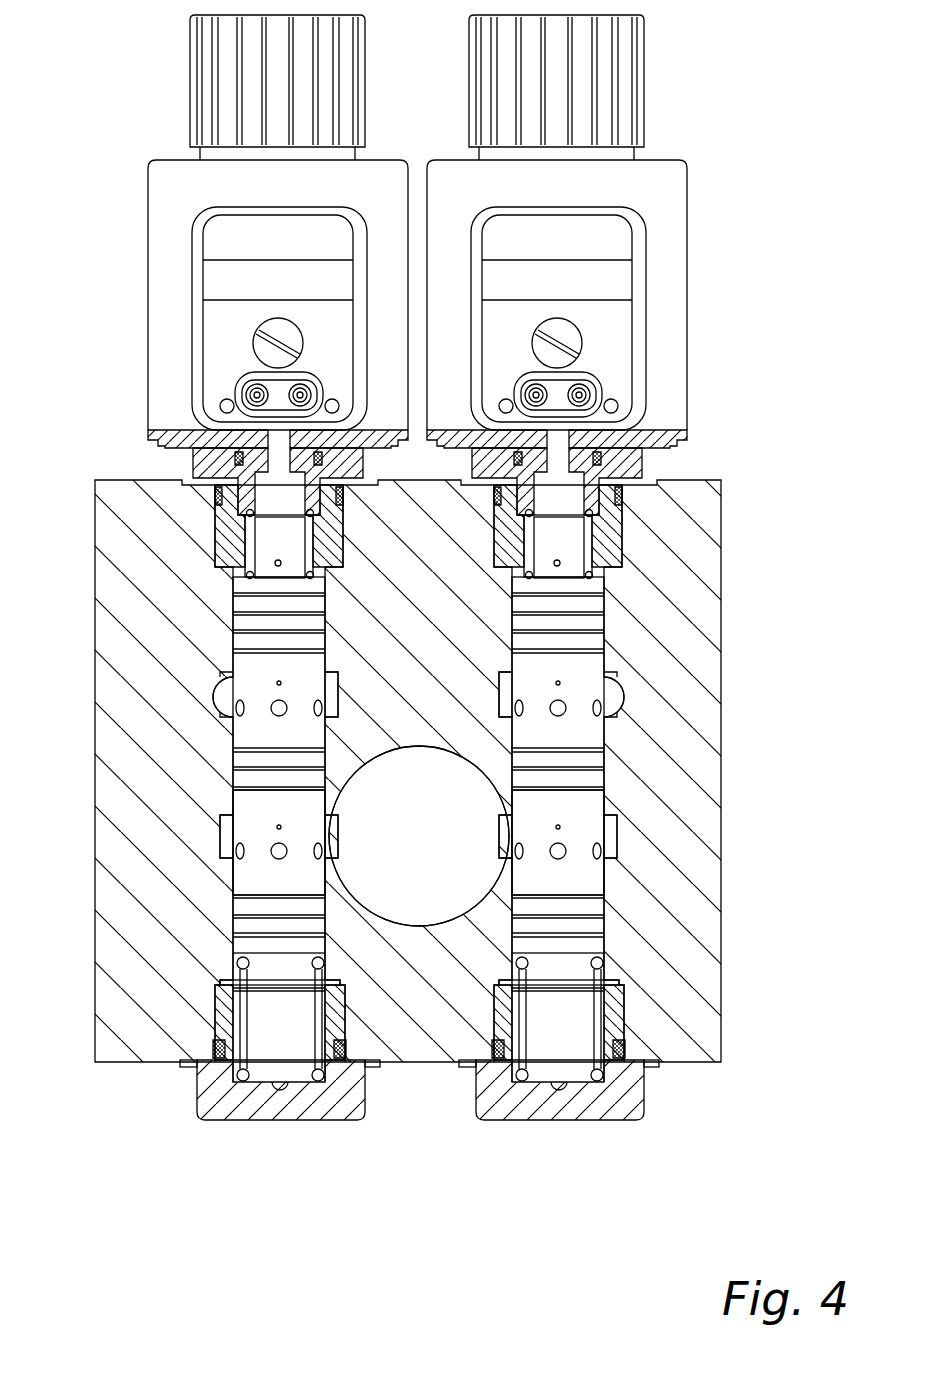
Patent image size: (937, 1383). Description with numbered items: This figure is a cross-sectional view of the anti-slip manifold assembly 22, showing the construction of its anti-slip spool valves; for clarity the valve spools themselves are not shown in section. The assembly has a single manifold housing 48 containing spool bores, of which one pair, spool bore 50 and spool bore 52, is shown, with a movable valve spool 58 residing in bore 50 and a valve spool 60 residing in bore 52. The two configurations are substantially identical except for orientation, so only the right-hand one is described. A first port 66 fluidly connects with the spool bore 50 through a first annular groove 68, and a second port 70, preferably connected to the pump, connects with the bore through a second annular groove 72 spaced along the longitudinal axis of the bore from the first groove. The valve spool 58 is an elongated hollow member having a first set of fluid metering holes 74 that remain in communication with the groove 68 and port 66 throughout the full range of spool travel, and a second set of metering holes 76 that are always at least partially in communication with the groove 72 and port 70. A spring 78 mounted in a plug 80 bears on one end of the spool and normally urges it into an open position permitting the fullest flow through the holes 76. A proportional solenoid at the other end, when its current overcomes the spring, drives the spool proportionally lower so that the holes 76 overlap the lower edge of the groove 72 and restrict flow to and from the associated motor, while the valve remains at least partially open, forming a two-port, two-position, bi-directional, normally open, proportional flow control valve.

The anti-slip manifold assembly 22 is at (443, 605).
The manifold housing 48 is at (707, 715).
The spool bore 50 is at (653, 842).
The spool bore 52 is at (235, 888).
The valve spool 58 is at (653, 732).
The valve spool 60 is at (223, 697).
The first port 66 is at (699, 707).
The first annular groove 68 is at (647, 681).
The second port 70 is at (426, 748).
The second annular groove 72 is at (699, 824).
The first set of fluid metering holes 74 is at (672, 665).
The second set of metering holes 76 is at (672, 807).
The spring 78 is at (693, 959).
The plug 80 is at (559, 1128).